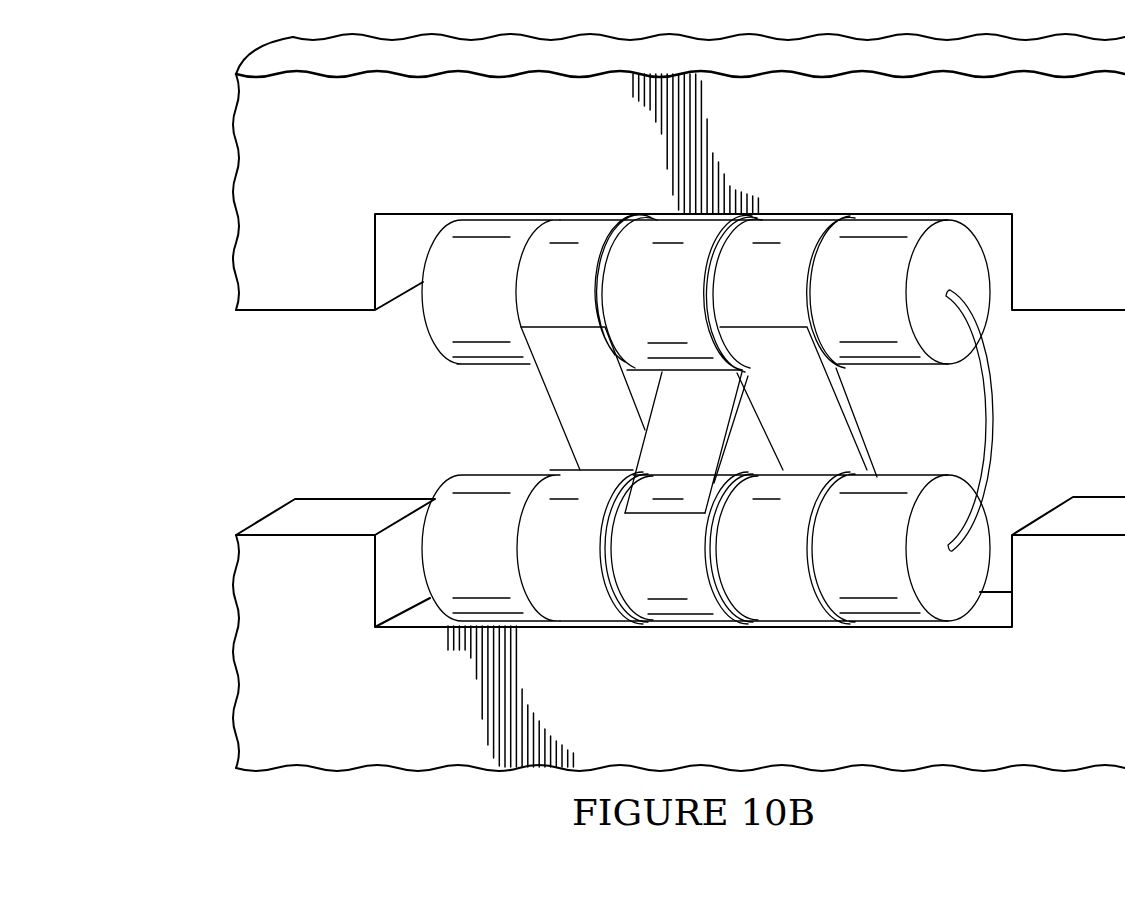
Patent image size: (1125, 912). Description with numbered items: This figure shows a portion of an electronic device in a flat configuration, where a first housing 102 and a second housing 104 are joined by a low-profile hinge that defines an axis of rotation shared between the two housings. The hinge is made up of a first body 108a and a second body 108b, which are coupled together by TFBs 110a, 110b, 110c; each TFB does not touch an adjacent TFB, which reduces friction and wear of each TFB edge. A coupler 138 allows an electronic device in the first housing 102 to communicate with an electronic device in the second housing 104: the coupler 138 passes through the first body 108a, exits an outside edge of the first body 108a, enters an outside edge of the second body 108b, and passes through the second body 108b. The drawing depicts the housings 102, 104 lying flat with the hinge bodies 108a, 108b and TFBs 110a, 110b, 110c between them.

The first housing 102 is at (236, 193).
The second housing 104 is at (236, 690).
The first body 108a is at (500, 364).
The second body 108b is at (900, 475).
The TFB 110a is at (812, 622).
The TFB 110b is at (710, 622).
The TFB 110c is at (603, 622).
The coupler 138 is at (992, 420).